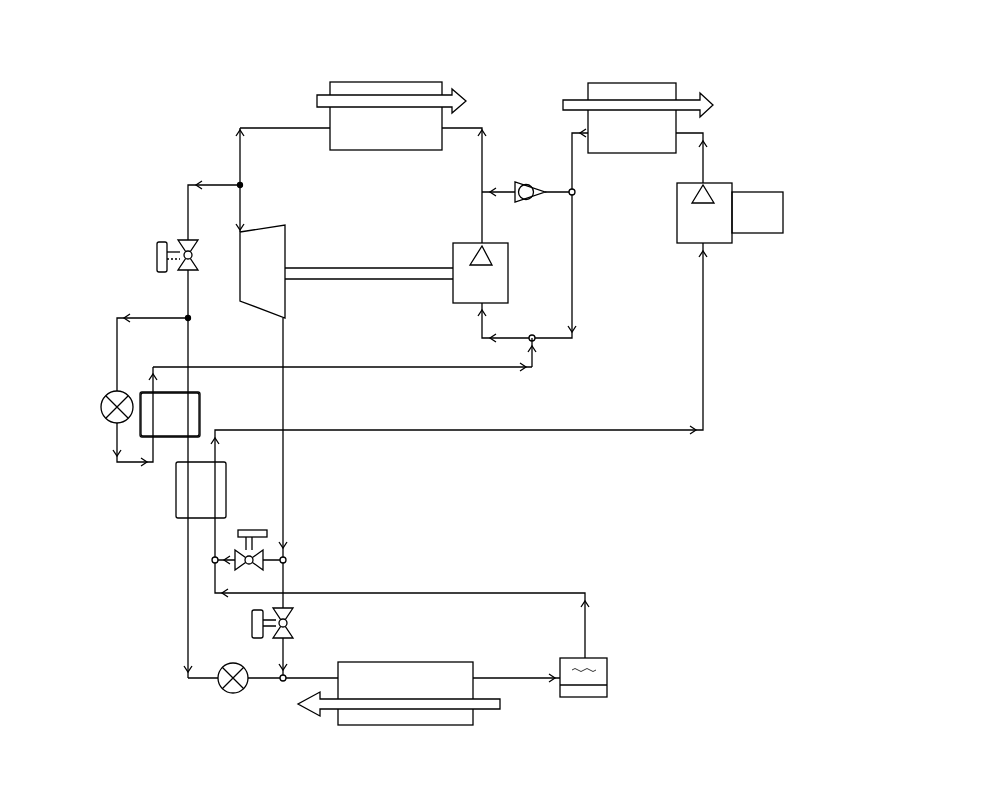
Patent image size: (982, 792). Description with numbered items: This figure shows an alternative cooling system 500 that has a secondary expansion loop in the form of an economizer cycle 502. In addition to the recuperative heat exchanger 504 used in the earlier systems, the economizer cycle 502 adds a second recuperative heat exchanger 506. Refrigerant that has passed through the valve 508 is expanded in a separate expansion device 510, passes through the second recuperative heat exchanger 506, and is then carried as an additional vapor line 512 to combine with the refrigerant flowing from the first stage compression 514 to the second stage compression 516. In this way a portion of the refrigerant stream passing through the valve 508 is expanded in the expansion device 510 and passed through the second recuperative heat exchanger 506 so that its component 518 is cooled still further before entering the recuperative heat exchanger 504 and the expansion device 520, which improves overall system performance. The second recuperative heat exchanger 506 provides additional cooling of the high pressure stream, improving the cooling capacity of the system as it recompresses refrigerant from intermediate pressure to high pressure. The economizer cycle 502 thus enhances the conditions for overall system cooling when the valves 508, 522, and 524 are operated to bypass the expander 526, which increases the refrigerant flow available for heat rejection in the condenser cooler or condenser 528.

The cooling system 500 is at (782, 72).
The economizer cycle 502 is at (61, 291).
The recuperative heat exchanger 504 is at (176, 518).
The second recuperative heat exchanger 506 is at (148, 425).
The valve 508 is at (162, 242).
The expansion device 510 is at (100, 409).
The additional vapor line 512 is at (334, 369).
The first stage compression 514 is at (652, 389).
The second stage compression 516 is at (433, 324).
The component 518 is at (202, 410).
The expansion device 520 is at (233, 694).
The valve 522 is at (267, 533).
The valve 524 is at (252, 622).
The expander 526 is at (286, 243).
The condenser 528 is at (358, 82).